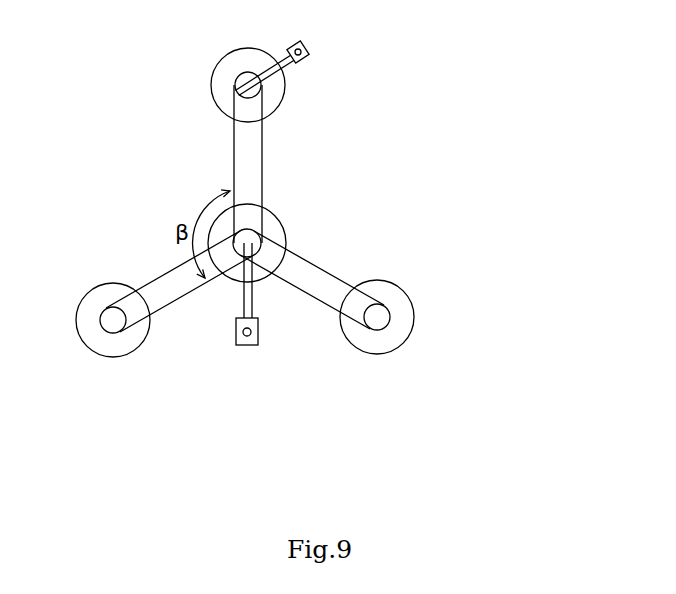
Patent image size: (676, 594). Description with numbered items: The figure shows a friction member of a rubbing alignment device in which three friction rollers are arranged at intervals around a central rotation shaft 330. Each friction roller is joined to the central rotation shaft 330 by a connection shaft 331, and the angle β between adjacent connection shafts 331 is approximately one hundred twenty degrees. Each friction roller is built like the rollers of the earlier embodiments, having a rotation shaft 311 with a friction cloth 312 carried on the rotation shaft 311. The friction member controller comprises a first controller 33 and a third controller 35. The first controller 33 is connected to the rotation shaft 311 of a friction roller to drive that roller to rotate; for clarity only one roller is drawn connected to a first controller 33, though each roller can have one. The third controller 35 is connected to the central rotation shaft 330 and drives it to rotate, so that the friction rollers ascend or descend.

The first controller 33 is at (310, 48).
The connection shaft 331 is at (252, 151).
The central rotation shaft 330 is at (268, 228).
The third controller 35 is at (235, 341).
The friction cloth 312 is at (403, 310).
The rotation shaft 311 is at (380, 318).